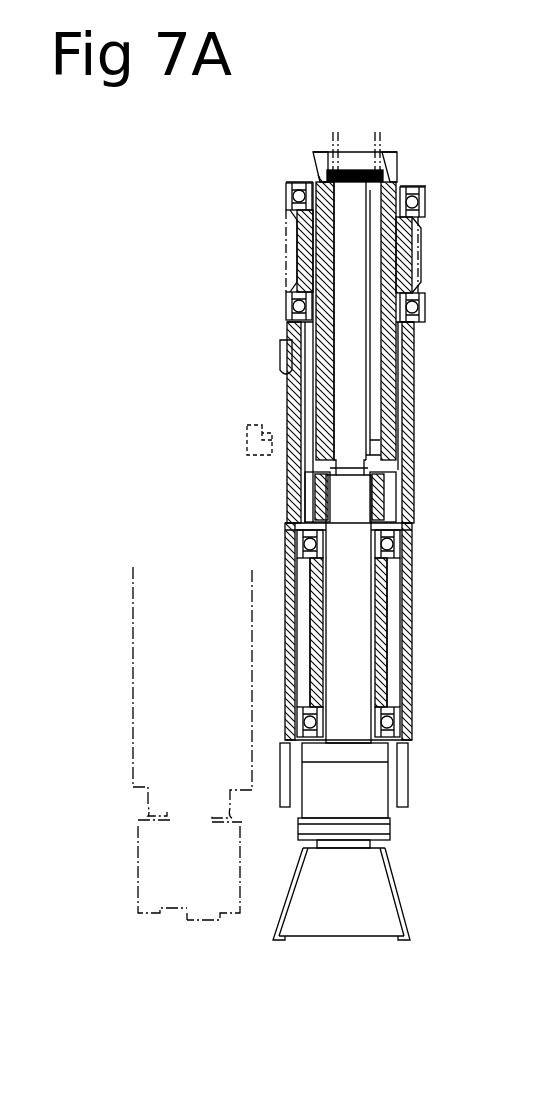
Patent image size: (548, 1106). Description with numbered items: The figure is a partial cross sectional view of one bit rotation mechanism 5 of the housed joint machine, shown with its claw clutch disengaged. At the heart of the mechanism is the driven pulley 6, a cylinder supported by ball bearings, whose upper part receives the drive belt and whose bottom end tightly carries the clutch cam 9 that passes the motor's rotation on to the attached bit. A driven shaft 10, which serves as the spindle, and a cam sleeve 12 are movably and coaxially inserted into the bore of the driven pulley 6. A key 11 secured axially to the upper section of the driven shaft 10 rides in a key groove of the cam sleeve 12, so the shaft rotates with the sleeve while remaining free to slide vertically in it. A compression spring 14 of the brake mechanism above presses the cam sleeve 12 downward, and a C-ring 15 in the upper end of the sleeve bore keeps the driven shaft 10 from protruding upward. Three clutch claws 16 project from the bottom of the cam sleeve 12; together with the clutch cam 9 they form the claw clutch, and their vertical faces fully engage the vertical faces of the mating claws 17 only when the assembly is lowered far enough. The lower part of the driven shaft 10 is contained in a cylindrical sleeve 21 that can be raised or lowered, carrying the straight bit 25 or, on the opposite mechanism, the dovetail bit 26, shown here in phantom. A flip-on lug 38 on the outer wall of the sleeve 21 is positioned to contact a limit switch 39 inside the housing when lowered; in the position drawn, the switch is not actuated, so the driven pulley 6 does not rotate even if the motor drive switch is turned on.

The bit rotation mechanism 5 is at (420, 181).
The driven pulley 6 is at (402, 250).
The clutch cam 9 is at (317, 498).
The driven shaft 10 is at (352, 385).
The key 11 is at (373, 267).
The cam sleeve 12 is at (408, 337).
The compression spring 14 is at (383, 142).
The C-ring 15 is at (318, 175).
The clutch claws 16 is at (380, 447).
The mating claws 17 is at (397, 473).
The sleeve 21 is at (290, 558).
The straight bit 25 is at (197, 900).
The dovetail bit 26 is at (347, 930).
The flip-on lug 38 is at (280, 342).
The limit switch 39 is at (263, 422).